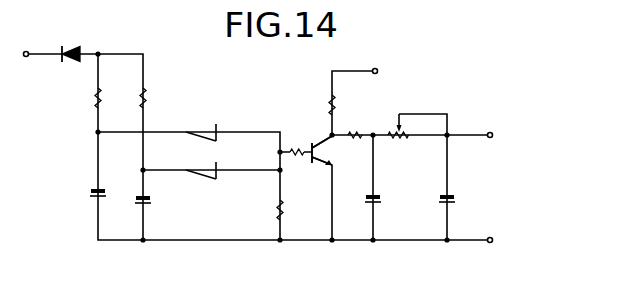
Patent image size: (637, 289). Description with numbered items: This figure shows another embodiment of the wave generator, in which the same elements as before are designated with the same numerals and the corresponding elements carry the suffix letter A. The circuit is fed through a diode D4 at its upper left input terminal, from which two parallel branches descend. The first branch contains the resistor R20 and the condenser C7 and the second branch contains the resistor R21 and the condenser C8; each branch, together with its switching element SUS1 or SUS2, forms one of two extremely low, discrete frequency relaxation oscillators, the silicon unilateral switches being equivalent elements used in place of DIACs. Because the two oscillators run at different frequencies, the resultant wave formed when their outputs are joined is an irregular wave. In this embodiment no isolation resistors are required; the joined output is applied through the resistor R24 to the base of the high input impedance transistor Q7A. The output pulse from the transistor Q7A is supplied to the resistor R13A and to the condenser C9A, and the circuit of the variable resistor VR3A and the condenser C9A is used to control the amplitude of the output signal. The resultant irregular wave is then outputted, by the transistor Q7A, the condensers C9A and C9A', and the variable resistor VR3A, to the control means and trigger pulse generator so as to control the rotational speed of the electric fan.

The diode D4 is at (67, 44).
The resistor R20 is at (81, 96).
The resistor R21 is at (160, 96).
The silicon unilateral switch SUS1 is at (212, 122).
The silicon unilateral switch SUS2 is at (211, 183).
The condenser C7 is at (84, 198).
The condenser C8 is at (154, 203).
The resistor R24 is at (298, 137).
The transistor Q7A is at (312, 163).
The resistor R13A is at (352, 104).
The variable resistor VR3A is at (415, 115).
The condenser C9A is at (391, 202).
The condenser C9A' is at (467, 202).